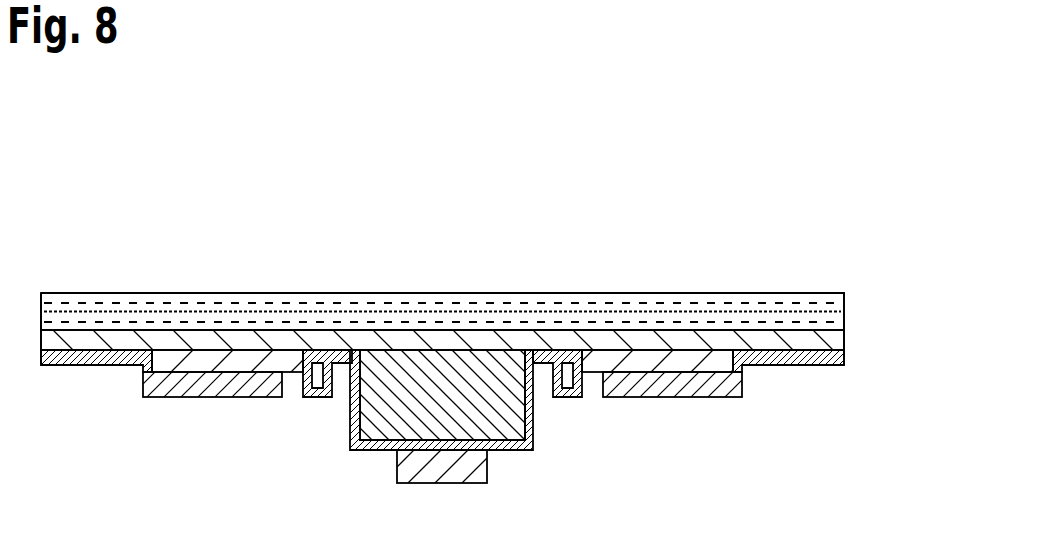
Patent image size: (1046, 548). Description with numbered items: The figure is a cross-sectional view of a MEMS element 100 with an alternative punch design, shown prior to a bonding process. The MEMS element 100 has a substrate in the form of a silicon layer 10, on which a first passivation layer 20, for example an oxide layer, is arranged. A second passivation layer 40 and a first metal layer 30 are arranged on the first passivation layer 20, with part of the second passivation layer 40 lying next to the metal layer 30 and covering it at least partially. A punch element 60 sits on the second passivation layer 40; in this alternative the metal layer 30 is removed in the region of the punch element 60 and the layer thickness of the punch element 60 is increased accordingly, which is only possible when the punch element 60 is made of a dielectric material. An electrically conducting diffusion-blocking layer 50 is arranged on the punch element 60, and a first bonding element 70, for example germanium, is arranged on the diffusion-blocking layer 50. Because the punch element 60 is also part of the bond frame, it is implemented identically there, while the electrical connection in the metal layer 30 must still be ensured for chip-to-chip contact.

The MEMS element 100 is at (95, 272).
The silicon layer 10 is at (833, 312).
The first passivation layer 20 is at (833, 340).
The first metal layer 30 is at (260, 358).
The second passivation layer 40 is at (840, 356).
The diffusion-blocking layer 50 is at (742, 393).
The punch element 60 is at (507, 417).
The first bonding element 70 is at (480, 467).